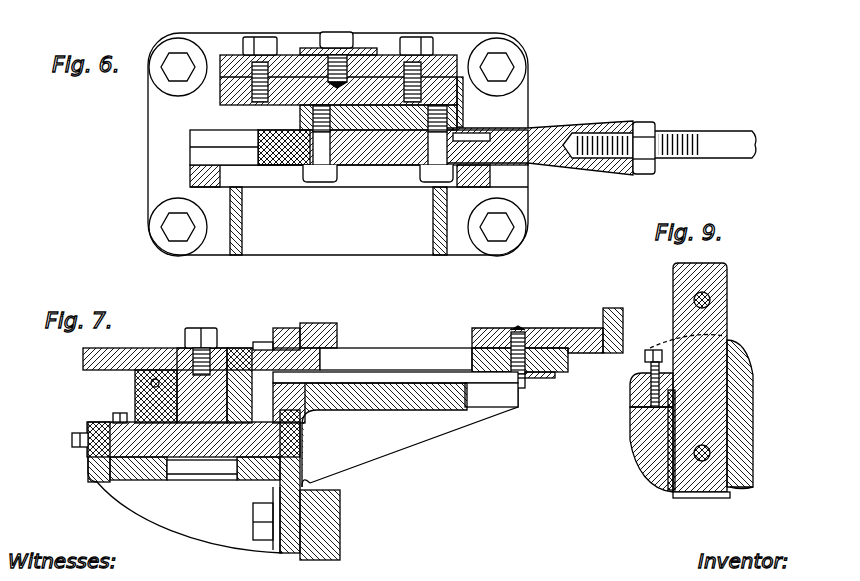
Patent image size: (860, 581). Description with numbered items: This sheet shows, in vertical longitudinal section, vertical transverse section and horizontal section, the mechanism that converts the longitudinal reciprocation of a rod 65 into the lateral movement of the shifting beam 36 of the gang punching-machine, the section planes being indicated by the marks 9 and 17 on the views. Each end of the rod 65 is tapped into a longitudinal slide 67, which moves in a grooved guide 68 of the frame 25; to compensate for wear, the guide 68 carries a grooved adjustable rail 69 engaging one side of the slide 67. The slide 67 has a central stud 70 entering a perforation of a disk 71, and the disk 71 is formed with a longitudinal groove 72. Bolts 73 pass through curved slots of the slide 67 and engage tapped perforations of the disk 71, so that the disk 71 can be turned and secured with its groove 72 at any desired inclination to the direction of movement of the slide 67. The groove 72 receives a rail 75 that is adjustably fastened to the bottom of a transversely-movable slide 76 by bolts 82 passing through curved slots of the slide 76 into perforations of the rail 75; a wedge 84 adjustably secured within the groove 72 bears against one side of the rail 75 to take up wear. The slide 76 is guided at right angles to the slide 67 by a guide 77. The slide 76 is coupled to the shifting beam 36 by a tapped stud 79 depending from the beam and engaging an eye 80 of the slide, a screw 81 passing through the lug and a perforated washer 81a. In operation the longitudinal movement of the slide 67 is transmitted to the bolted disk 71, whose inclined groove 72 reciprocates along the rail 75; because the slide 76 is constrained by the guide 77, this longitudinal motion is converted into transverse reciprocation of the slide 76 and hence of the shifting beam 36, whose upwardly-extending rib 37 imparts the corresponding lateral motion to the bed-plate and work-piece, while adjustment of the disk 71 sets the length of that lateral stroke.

In FIG. 6, the sheet index 17 is at (213, 15).
In FIG. 6, the rod 65 is at (722, 132).
In FIG. 6, the longitudinal slide 67 is at (410, 175).
In FIG. 7, the longitudinal slide 67 is at (215, 470).
In FIG. 6, the grooved guide 68 is at (205, 140).
In FIG. 7, the grooved guide 68 is at (262, 452).
In FIG. 7, the adjustable rail 69 is at (95, 448).
In FIG. 6, the central stud 70 is at (362, 135).
In FIG. 7, the central stud 70 is at (130, 410).
In FIG. 6, the disk 71 is at (300, 118).
In FIG. 7, the disk 71 is at (250, 345).
In FIG. 9, the disk 71 is at (755, 436).
In FIG. 6, the longitudinal groove 72 is at (462, 95).
In FIG. 9, the longitudinal groove 72 is at (700, 498).
In FIG. 6, the bolts 73 is at (322, 155).
In FIG. 6, the rail 75 is at (232, 98).
In FIG. 7, the rail 75 is at (212, 344).
In FIG. 9, the rail 75 is at (727, 308).
In FIG. 6, the transversely-movable slide 76 is at (390, 50).
In FIG. 7, the transversely-movable slide 76 is at (130, 357).
In FIG. 7, the guide 77 is at (430, 378).
In FIG. 7, the tapped stud 79 is at (533, 390).
In FIG. 7, the eye 80 is at (568, 370).
In FIG. 7, the screw 81 is at (516, 390).
In FIG. 7, the perforated washer 81a is at (538, 380).
In FIG. 6, the bolts 82 is at (268, 48).
In FIG. 7, the wedge 84 is at (140, 396).
In FIG. 9, the wedge 84 is at (655, 408).
In FIG. 7, the pin 9 is at (135, 391).
In FIG. 7, the frame 25 is at (333, 510).
In FIG. 7, the shifting beam 36 is at (598, 330).
In FIG. 7, the longitudinal rib 37 is at (624, 318).